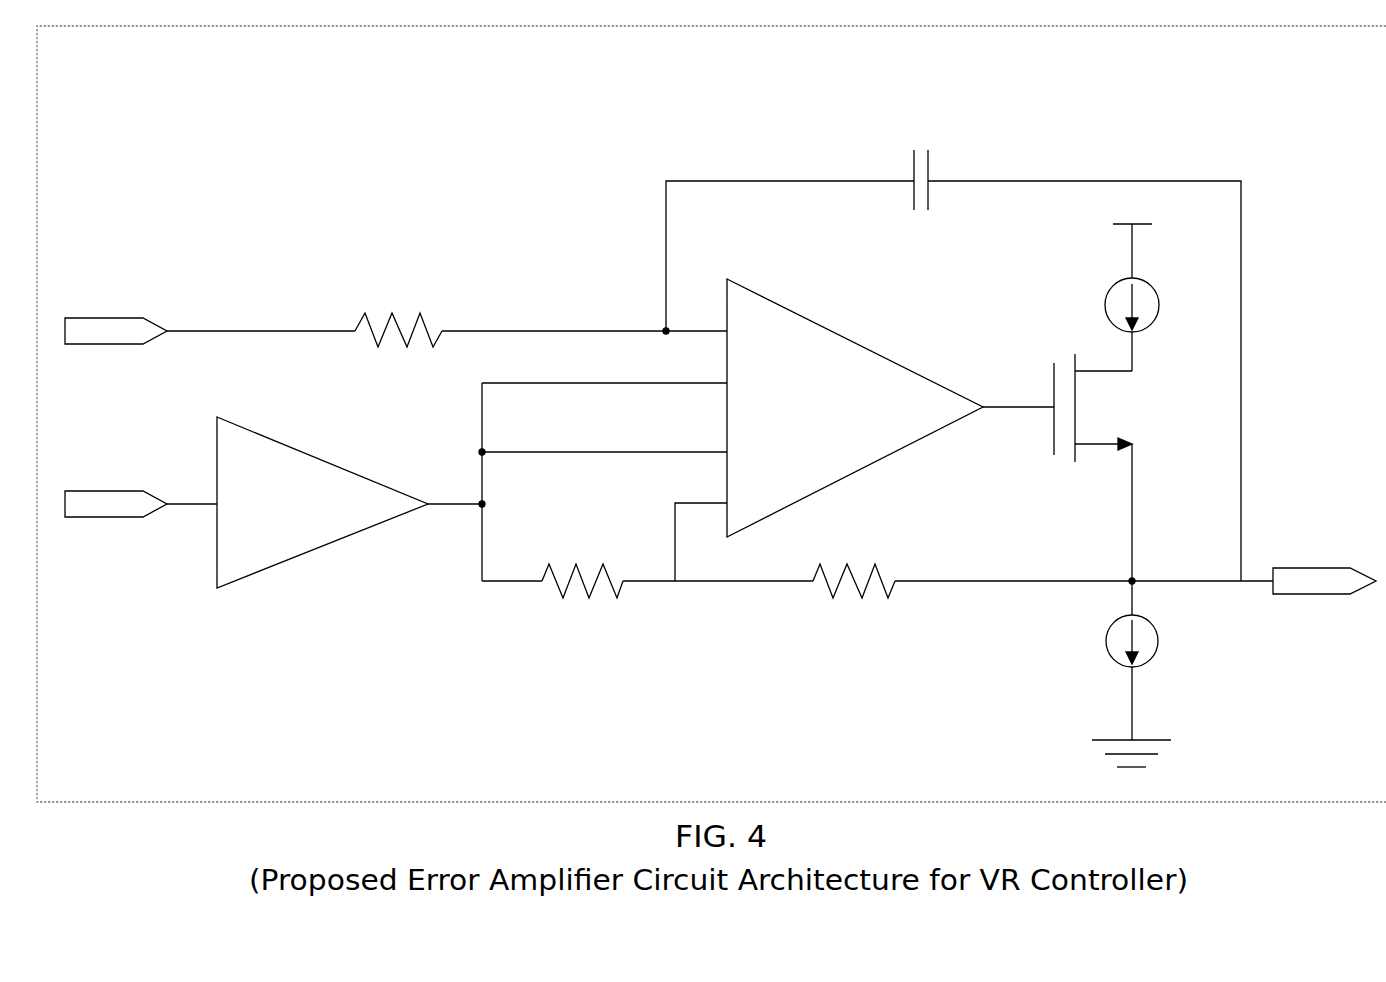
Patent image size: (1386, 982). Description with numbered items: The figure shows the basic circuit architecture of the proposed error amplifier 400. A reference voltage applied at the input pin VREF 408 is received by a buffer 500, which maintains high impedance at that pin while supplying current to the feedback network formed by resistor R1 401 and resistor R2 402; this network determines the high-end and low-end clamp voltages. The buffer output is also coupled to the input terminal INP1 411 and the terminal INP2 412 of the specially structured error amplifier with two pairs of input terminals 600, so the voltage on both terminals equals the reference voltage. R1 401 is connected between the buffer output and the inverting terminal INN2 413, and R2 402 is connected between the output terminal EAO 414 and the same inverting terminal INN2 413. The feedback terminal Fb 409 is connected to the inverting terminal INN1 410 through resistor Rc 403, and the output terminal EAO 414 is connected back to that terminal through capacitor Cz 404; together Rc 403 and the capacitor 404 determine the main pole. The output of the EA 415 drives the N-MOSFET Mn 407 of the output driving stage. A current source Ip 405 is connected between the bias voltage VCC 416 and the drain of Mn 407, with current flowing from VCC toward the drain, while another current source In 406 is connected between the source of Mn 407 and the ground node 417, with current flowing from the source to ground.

The error amplifier 400 is at (660, 71).
The resistor R1 401 is at (564, 652).
The resistor R2 402 is at (835, 652).
The resistor Rc 403 is at (382, 401).
The capacitor Cz 404 is at (904, 267).
The current source Ip 405 is at (1165, 331).
The current source In 406 is at (1173, 671).
The N-MOSFET Mn 407 is at (1054, 526).
The input pin VREF 408 is at (122, 525).
The feedback terminal Fb 409 is at (106, 313).
The inverting terminal INN1 410 is at (682, 324).
The input terminal INP1 411 is at (682, 381).
The terminal INP2 412 is at (682, 444).
The inverting terminal INN2 413 is at (682, 496).
The output terminal EAO 414 is at (1313, 560).
The output of the EA 415 is at (1003, 402).
The bias voltage VCC 416 is at (1110, 220).
The ground node 417 is at (1085, 750).
The buffer 500 is at (269, 527).
The error amplifier with two pairs of input terminals 600 is at (817, 437).